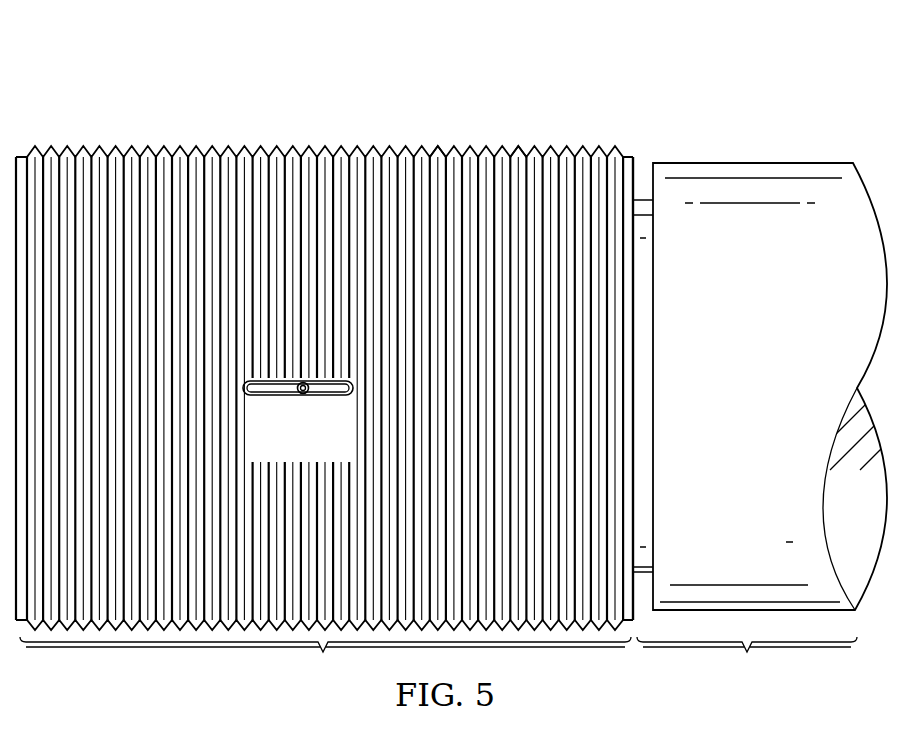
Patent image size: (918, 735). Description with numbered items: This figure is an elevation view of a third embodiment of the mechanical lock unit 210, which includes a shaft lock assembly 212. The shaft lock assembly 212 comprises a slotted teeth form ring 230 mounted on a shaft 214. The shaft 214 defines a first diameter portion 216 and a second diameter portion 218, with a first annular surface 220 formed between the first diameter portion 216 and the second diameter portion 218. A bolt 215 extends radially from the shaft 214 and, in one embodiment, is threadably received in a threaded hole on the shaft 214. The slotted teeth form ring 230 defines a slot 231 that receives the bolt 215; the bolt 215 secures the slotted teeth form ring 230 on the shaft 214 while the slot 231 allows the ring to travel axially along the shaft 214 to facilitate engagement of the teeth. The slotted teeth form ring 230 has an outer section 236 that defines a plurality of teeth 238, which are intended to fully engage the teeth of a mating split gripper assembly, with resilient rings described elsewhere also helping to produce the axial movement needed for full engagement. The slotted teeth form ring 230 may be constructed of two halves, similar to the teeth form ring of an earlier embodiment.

The mechanical lock unit 210 is at (80, 94).
The slotted teeth form ring 230 is at (324, 105).
The shaft lock assembly 212 is at (270, 142).
The outer section 236 is at (443, 146).
The teeth 238 is at (524, 147).
The first annular surface 220 is at (653, 165).
The shaft 214 is at (773, 403).
The second diameter portion 218 is at (325, 661).
The first diameter portion 216 is at (747, 661).
The slot 231 is at (275, 396).
The bolt 215 is at (305, 396).